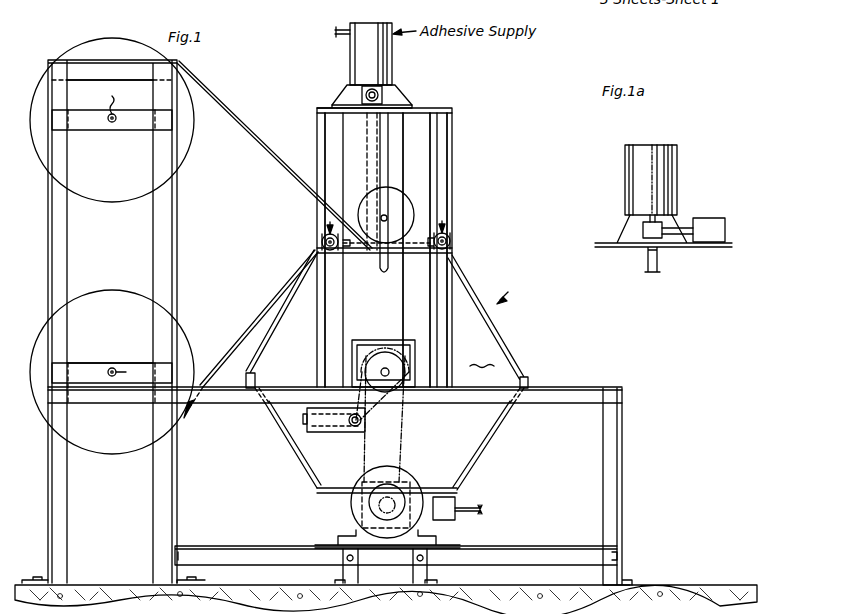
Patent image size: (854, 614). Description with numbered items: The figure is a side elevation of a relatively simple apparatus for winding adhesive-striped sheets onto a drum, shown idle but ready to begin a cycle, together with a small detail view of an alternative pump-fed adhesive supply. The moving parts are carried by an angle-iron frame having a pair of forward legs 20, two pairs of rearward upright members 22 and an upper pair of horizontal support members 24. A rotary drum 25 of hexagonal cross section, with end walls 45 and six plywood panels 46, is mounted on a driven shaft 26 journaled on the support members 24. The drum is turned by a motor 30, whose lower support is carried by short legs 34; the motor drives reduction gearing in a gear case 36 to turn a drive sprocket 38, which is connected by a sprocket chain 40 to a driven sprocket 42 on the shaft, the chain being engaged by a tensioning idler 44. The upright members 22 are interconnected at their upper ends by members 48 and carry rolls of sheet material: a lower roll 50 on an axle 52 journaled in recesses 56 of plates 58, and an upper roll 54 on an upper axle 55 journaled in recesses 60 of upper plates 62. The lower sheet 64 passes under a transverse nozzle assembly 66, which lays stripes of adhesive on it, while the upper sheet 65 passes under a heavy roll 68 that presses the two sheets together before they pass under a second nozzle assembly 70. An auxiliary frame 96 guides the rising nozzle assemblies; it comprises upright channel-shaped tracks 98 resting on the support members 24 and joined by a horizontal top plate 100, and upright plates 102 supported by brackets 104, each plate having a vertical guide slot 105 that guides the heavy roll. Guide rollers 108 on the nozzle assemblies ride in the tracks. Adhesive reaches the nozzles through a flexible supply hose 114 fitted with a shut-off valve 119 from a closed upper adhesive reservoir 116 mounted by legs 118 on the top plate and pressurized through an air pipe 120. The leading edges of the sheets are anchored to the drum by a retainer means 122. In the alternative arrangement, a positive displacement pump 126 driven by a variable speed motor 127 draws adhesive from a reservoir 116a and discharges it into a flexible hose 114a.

In FIG. 1, the forward legs 20 is at (608, 490).
In FIG. 1, the rearward upright members 22 is at (62, 499).
In FIG. 1, the horizontal support members 24 is at (557, 398).
In FIG. 1, the rotary drum 25 is at (510, 290).
In FIG. 1, the driven shaft 26 is at (385, 368).
In FIG. 1, the motor 30 is at (350, 505).
In FIG. 1, the short legs 34 is at (413, 572).
In FIG. 1, the gear case 36 is at (362, 522).
In FIG. 1, the drive sprocket 38 is at (392, 510).
In FIG. 1, the sprocket chain 40 is at (410, 425).
In FIG. 1, the driven sprocket 42 is at (368, 415).
In FIG. 1, the tensioning idler 44 is at (358, 428).
In FIG. 1, the end walls 45 is at (482, 358).
In FIG. 1, the panels 46 is at (510, 318).
In FIG. 1, the interconnecting members 48 is at (85, 72).
In FIG. 1, the lower roll 50 is at (130, 351).
In FIG. 1, the lower axle 52 is at (120, 374).
In FIG. 1, the upper roll 54 is at (136, 112).
In FIG. 1, the upper axle 55 is at (116, 122).
In FIG. 1, the recesses 56 is at (113, 367).
In FIG. 1, the plates 58 is at (80, 378).
In FIG. 1, the recesses 60 is at (112, 108).
In FIG. 1, the upper plates 62 is at (80, 124).
In FIG. 1, the lower sheet 64 is at (243, 337).
In FIG. 1, the upper sheet 65 is at (232, 108).
In FIG. 1, the transverse nozzle assembly 66 is at (322, 214).
In FIG. 1, the heavy roll 68 is at (388, 205).
In FIG. 1, the second nozzle assembly 70 is at (447, 222).
In FIG. 1, the auxiliary frame 96 is at (407, 238).
In FIG. 1, the upright channel-shaped tracks 98 is at (338, 142).
In FIG. 1, the horizontal top plate 100 is at (330, 104).
In FIG. 1, the upright plates 102 is at (398, 156).
In FIG. 1, the brackets 104 is at (412, 350).
In FIG. 1, the vertical guide slot 105 is at (386, 146).
In FIG. 1, the guide rollers 108 is at (322, 238).
In FIG. 1, the flexible supply hose 114 is at (402, 110).
In FIG. 1, the upper adhesive reservoir 116 is at (372, 64).
In FIG. 1, the legs 118 is at (350, 100).
In FIG. 1, the shut-off valve 119 is at (380, 92).
In FIG. 1, the air pipe 120 is at (340, 22).
In FIG. 1, the retainer means 122 is at (460, 496).
In FIG. 1A, the reservoir 116a is at (658, 156).
In FIG. 1A, the flexible hose 114a is at (660, 262).
In FIG. 1A, the positive displacement pump 126 is at (648, 232).
In FIG. 1A, the variable speed motor 127 is at (705, 218).